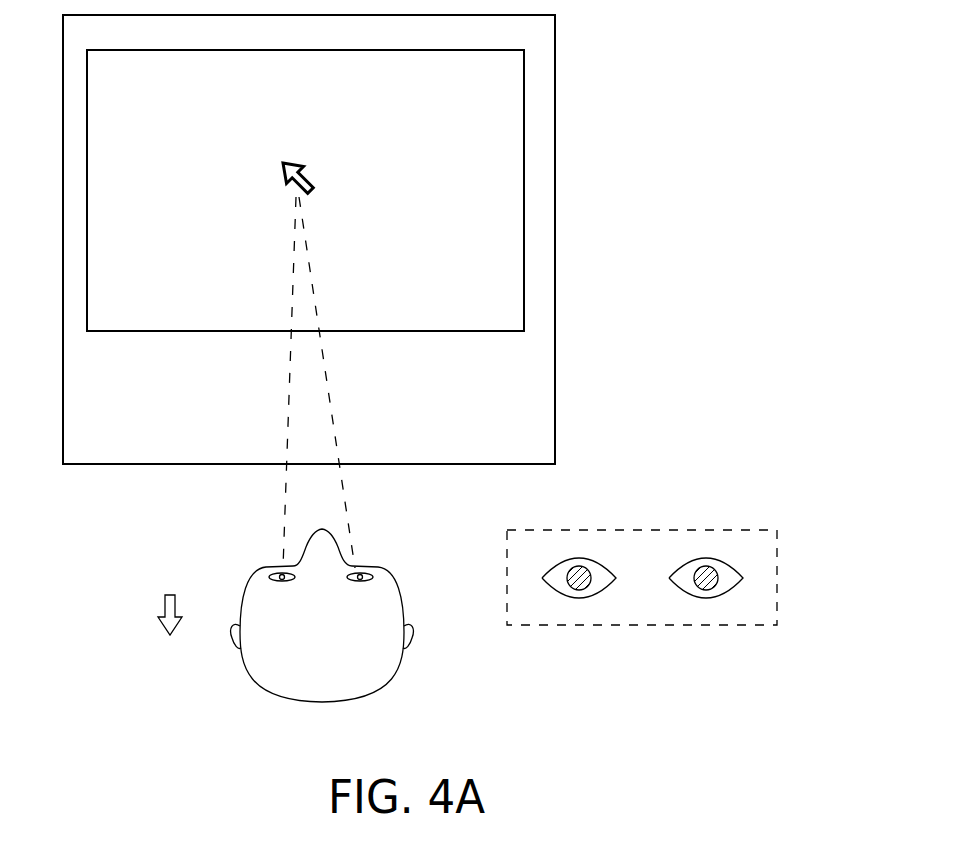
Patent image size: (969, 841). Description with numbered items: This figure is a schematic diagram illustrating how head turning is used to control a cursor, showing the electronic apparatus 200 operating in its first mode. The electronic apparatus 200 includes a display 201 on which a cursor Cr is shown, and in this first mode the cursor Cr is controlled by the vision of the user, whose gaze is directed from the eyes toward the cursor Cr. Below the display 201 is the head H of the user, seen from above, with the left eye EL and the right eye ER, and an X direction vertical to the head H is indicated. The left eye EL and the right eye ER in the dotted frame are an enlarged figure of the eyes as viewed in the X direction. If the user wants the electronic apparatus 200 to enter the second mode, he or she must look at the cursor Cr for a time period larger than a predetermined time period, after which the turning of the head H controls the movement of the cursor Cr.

The electronic apparatus 200 is at (555, 60).
The display 201 is at (524, 119).
The cursor Cr is at (310, 182).
The head H is at (396, 597).
The left eye EL is at (282, 573).
The right eye ER is at (360, 573).
The X direction X is at (170, 602).